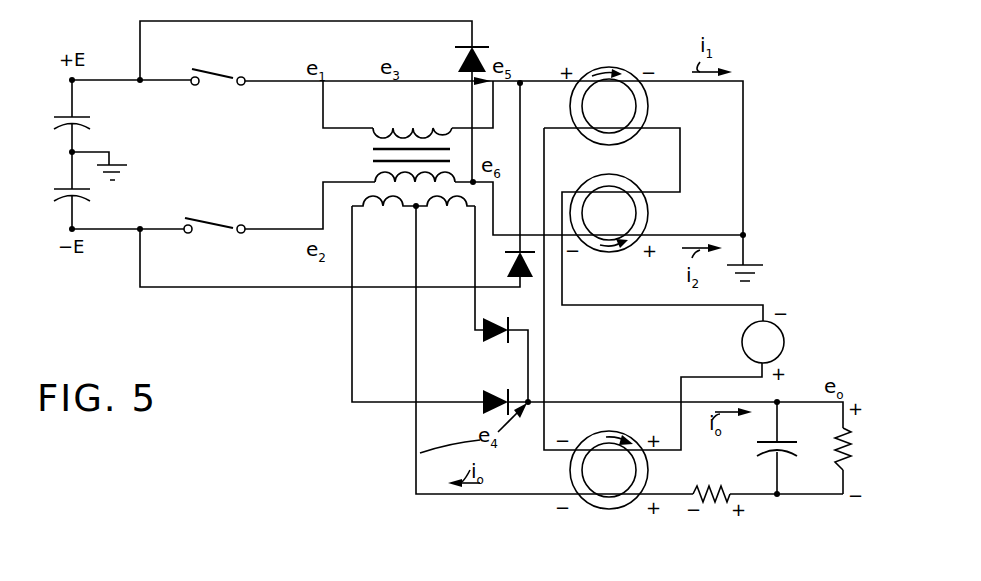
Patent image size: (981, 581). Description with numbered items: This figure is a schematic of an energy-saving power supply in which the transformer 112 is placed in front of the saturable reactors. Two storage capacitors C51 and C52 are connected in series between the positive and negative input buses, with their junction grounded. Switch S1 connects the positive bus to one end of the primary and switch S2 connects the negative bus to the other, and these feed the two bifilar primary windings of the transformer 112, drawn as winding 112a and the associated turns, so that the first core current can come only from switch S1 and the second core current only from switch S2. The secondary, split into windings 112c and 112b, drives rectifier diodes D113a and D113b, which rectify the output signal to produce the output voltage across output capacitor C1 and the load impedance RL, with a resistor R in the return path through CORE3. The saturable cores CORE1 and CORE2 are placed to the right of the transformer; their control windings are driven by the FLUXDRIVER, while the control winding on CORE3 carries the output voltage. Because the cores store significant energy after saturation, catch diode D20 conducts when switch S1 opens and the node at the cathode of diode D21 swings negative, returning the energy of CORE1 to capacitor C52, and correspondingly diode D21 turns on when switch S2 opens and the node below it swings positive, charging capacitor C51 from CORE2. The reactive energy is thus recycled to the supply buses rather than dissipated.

The capacitor C51 is at (58, 117).
The storage capacitor C52 is at (58, 192).
The switch S1 is at (213, 68).
The switch S2 is at (216, 218).
The transformer 112 is at (359, 169).
The transformer winding 112a is at (448, 173).
The transformer secondary winding 112b is at (445, 219).
The transformer secondary winding 112c is at (384, 219).
The diode D21 is at (483, 45).
The catch diode D20 is at (506, 272).
The diode D113a is at (485, 342).
The diode D113b is at (485, 394).
The core 1 CORE1 is at (628, 50).
The core 2 CORE2 is at (615, 250).
The core 3 CORE3 is at (620, 510).
The flux driver FLUXDRIVER is at (783, 337).
The output capacitor C1 is at (767, 444).
The resistor R is at (718, 484).
The output impedance RL is at (840, 446).